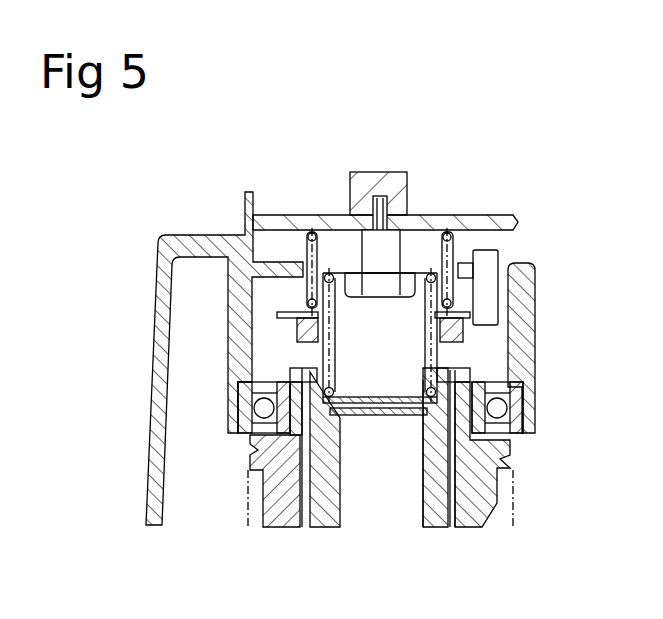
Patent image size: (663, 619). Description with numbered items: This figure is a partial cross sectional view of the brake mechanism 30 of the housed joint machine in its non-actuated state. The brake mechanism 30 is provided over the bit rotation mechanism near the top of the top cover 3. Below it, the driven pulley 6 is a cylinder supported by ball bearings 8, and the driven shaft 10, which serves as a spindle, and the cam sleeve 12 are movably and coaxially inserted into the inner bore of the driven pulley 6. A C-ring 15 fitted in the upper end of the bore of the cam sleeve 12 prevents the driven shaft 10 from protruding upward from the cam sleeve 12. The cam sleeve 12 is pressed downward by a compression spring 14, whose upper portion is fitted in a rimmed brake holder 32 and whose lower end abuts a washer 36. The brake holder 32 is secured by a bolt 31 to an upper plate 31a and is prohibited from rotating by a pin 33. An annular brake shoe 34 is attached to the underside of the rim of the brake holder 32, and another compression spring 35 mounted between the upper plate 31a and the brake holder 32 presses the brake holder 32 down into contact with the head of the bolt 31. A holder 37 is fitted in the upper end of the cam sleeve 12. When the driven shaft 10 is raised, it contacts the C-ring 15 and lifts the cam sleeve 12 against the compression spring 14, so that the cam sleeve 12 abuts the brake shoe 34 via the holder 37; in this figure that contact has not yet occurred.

The top cover 3 is at (155, 379).
The driven pulley 6 is at (487, 463).
The ball bearings 8 is at (502, 412).
The driven shaft 10 is at (380, 493).
The cam sleeve 12 is at (440, 505).
The compression spring 14 is at (435, 347).
The C-ring 15 is at (357, 440).
The brake mechanism 30 is at (514, 242).
The bolt 31 is at (382, 255).
The upper plate 31a is at (383, 182).
The brake holder 32 is at (440, 286).
The pin 33 is at (490, 273).
The brake shoe 34 is at (297, 322).
The compression spring 35 is at (318, 233).
The washer 36 is at (378, 397).
The holder 37 is at (470, 373).